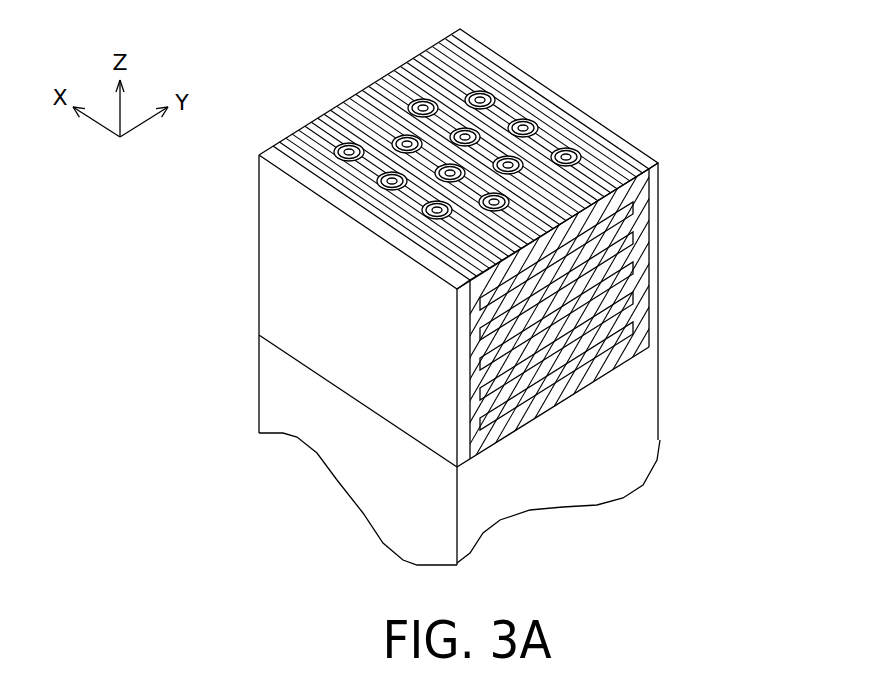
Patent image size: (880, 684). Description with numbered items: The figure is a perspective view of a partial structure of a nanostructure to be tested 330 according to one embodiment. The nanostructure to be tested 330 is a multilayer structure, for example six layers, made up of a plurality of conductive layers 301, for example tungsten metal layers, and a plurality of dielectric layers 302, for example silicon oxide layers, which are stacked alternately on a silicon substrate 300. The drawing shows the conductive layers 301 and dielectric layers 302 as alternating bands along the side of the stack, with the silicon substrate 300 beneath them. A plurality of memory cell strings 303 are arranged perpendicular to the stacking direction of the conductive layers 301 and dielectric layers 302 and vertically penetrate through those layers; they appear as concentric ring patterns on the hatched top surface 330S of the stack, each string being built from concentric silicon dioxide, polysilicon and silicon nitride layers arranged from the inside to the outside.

The nanostructure to be tested 330 is at (118, 25).
The top surface of light emitting structure 330S is at (372, 112).
The memory cell strings 303 is at (575, 148).
The conductive layers 301 is at (633, 332).
The dielectric layers 302 is at (490, 315).
The silicon substrate 300 is at (637, 397).